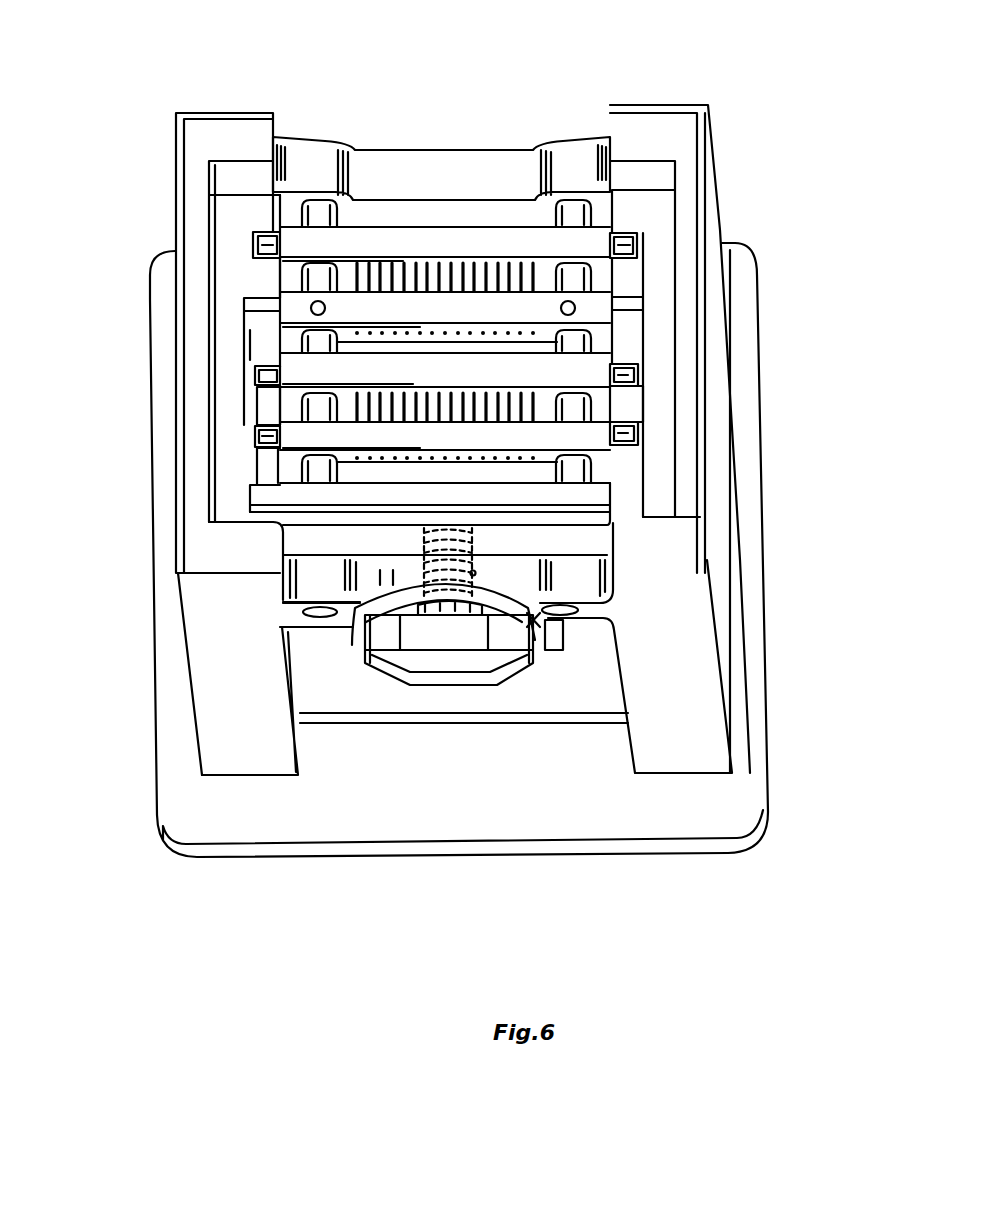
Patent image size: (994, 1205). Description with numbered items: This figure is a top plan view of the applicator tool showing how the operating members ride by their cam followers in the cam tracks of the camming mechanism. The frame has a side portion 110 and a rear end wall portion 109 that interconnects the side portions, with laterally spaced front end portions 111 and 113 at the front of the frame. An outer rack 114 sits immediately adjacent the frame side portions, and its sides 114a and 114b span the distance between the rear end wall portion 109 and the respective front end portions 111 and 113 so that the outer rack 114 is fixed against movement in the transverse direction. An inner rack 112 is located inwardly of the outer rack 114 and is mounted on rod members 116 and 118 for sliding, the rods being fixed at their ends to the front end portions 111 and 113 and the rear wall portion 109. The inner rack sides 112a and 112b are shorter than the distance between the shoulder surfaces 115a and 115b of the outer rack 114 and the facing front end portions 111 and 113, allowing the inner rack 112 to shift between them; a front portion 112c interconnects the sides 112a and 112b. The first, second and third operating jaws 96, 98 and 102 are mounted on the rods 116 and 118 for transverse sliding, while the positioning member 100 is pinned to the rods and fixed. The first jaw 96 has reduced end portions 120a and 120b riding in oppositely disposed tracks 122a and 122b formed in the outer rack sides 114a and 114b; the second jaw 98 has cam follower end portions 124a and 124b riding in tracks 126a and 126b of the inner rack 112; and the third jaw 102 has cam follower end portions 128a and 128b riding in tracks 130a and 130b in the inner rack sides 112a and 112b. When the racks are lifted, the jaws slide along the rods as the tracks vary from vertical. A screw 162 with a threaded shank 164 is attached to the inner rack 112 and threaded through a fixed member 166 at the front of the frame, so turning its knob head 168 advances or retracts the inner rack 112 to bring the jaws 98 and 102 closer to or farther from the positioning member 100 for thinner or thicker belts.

The first operating member 96 is at (592, 243).
The second operating member 98 is at (563, 437).
The positioning member 100 is at (590, 303).
The third operating member 102 is at (577, 373).
The end wall portion 109 is at (430, 180).
The frame side portion 110 is at (720, 467).
The frame front end portion 111 is at (237, 655).
The inner rack 112 is at (258, 490).
The inner rack side 112a is at (266, 465).
The inner rack side 112b is at (572, 495).
The front portion of inner rack 112c is at (608, 518).
The frame front end portion 113 is at (692, 718).
The outer rack 114 is at (228, 262).
The outer rack side 114a is at (231, 223).
The outer rack side 114b is at (653, 203).
The shoulder surface 115a is at (245, 305).
The shoulder surface 115b is at (627, 302).
The rod member 116 is at (270, 347).
The rod member 118 is at (628, 465).
The reduced end portion 120a is at (278, 236).
The reduced end portion 120b is at (632, 247).
The track 122a is at (265, 247).
The track 122b is at (614, 234).
The cam follower end portion 124a is at (262, 440).
The cam follower end portion 124b is at (572, 475).
The track 126a is at (262, 430).
The track 126b is at (634, 433).
The cam follower end portion 128a is at (260, 381).
The cam follower end portion 128b is at (608, 362).
The track 130a is at (260, 371).
The track 130b is at (634, 374).
The screw 162 is at (522, 686).
The threaded shank 164 is at (420, 572).
The fixed member 166 is at (535, 625).
The knob head 168 is at (447, 670).